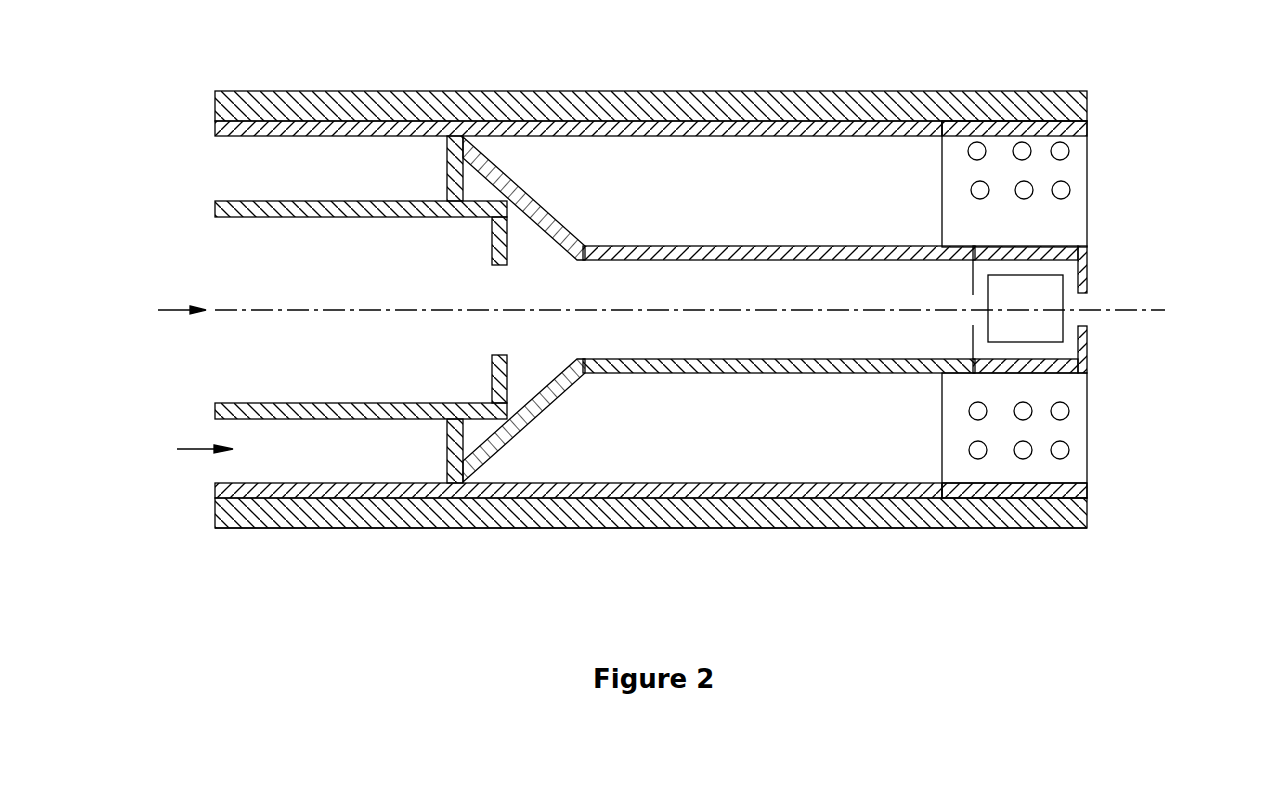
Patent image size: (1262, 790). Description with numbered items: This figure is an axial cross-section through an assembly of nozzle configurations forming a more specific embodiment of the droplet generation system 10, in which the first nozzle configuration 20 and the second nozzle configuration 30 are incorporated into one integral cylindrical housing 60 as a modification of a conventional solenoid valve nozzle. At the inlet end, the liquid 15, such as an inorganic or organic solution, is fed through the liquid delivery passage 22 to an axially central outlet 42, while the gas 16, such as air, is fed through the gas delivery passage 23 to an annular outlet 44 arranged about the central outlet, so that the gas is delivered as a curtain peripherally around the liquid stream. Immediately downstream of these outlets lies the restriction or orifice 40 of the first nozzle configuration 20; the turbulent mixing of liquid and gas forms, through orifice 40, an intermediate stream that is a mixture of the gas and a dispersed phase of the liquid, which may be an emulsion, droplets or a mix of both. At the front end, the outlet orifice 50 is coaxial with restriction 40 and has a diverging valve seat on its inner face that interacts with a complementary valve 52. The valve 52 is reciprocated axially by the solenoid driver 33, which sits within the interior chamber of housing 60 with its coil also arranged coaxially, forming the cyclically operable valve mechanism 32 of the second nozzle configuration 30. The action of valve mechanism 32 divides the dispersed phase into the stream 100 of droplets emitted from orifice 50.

The droplet generation system 10 is at (708, 528).
The liquid 15 is at (250, 311).
The gas 16 is at (186, 450).
The first nozzle configuration 20 is at (372, 419).
The liquid delivery passage 22 is at (373, 311).
The gas delivery passage 23 is at (309, 449).
The second nozzle configuration 30 is at (943, 434).
The valve mechanism 32 is at (990, 547).
The solenoid driver 33 is at (1039, 428).
The restriction or orifice 40 is at (565, 310).
The axially central outlet 42 is at (501, 310).
The annular outlet 44 is at (523, 412).
The outlet orifice 50 is at (1090, 310).
The valve 52 is at (1031, 310).
The cylindrical housing 60 is at (987, 489).
The stream of droplets 100 is at (722, 302).